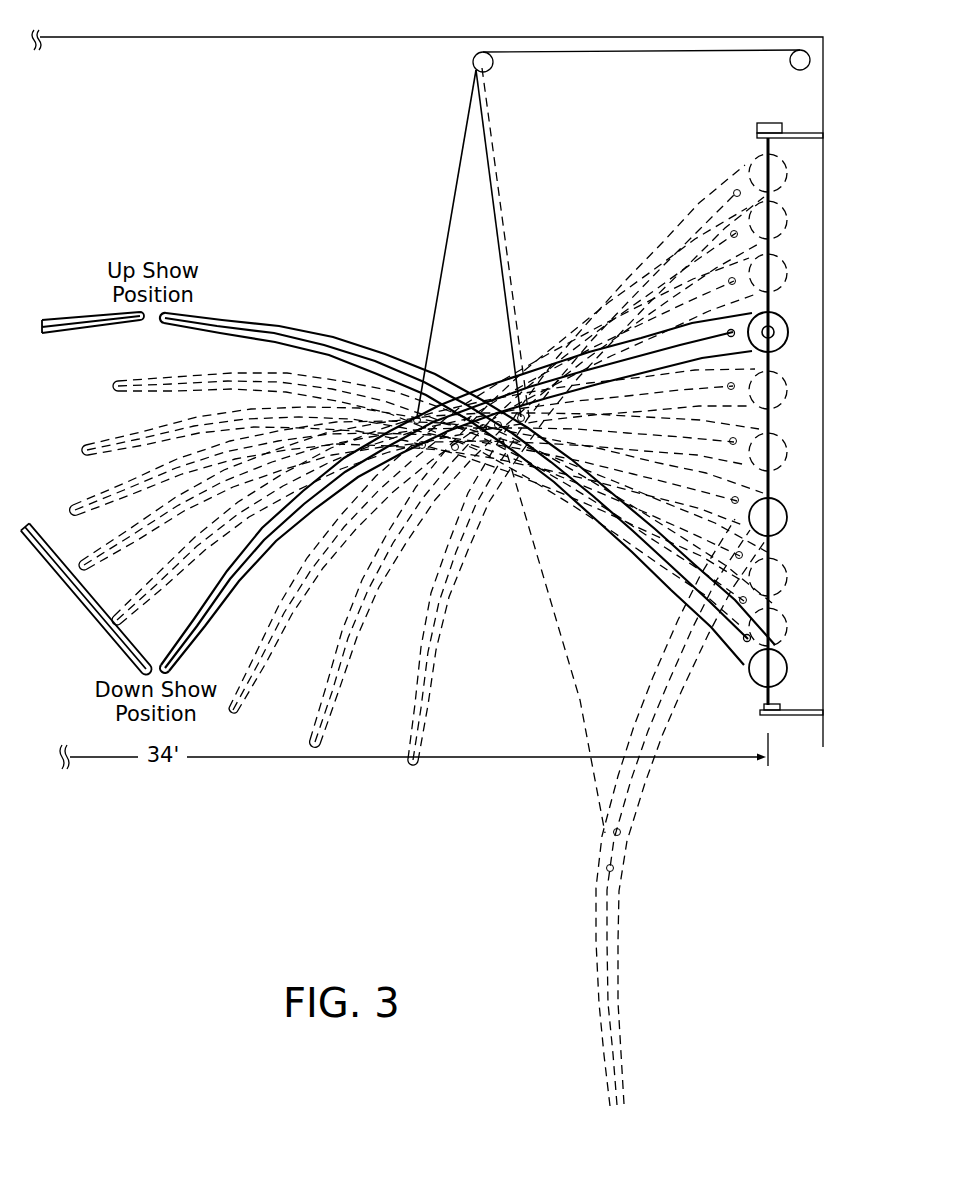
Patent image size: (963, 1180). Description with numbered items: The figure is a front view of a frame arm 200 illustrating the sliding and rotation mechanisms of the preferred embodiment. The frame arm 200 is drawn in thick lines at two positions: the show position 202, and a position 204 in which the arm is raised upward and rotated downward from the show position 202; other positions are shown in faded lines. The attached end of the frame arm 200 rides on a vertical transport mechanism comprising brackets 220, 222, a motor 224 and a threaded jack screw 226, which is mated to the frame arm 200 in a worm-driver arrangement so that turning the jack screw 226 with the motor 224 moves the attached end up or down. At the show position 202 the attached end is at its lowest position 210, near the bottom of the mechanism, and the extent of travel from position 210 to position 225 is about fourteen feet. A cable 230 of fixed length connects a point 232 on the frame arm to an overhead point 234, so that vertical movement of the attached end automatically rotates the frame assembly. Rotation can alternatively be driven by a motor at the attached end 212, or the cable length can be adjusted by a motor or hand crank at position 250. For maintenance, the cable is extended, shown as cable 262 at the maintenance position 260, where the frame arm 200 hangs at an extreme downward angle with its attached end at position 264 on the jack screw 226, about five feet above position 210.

The frame arm 200 is at (296, 248).
The show position 202 is at (327, 332).
The raised and rotated position 204 is at (190, 643).
The lowest position of attached end 210 is at (796, 652).
The attached end 212 is at (795, 316).
The bracket 220 is at (808, 128).
The bracket 222 is at (808, 708).
The motor 224 is at (768, 121).
The uppermost position of attached end 225 is at (788, 177).
The jack screw 226 is at (773, 145).
The cable 230 is at (447, 236).
The point on frame arm 232 is at (406, 395).
The overhead point 234 is at (466, 56).
The motor or hand crank position 250 is at (806, 42).
The maintenance position 260 is at (623, 874).
The extended cable 262 is at (573, 640).
The maintenance position of attached end 264 is at (795, 504).